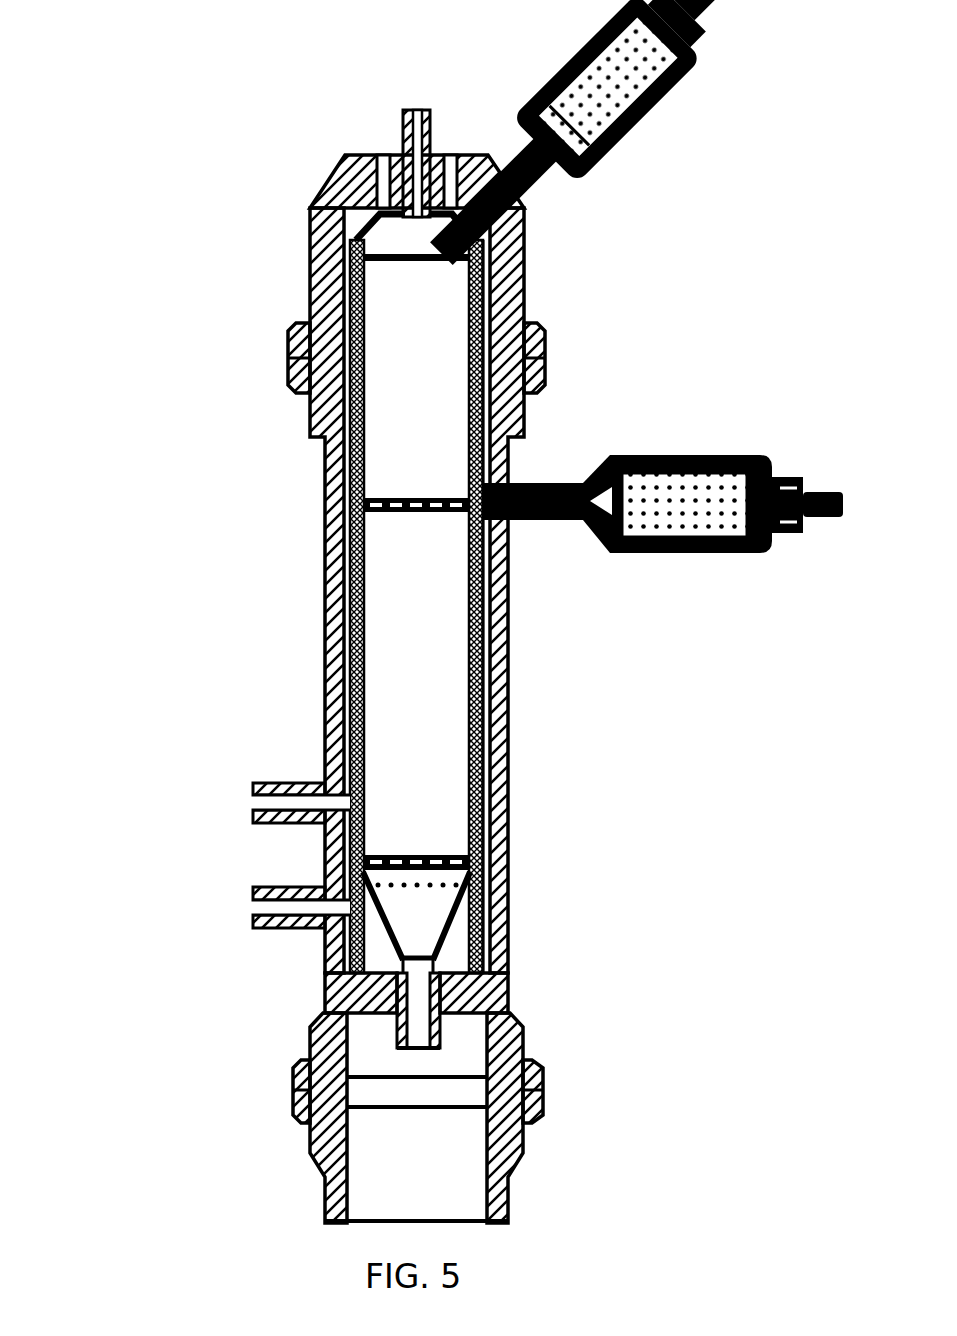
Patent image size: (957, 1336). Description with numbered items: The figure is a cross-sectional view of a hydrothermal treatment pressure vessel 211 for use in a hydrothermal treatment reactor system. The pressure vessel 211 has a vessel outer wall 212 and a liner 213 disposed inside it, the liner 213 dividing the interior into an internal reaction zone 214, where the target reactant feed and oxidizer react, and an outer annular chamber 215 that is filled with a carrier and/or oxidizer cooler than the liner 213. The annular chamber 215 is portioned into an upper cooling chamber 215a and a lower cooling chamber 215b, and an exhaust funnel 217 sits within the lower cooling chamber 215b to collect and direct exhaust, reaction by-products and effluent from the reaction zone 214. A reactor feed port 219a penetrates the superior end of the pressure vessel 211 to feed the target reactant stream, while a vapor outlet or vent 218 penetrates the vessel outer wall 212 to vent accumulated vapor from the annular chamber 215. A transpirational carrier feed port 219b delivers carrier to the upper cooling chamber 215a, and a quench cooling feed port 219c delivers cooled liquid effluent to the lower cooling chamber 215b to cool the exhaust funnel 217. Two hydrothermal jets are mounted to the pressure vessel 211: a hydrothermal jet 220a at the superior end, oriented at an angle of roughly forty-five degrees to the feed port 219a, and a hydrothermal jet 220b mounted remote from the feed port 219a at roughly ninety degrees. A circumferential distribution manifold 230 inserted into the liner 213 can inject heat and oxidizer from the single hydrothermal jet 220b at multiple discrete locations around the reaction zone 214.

The hydrothermal treatment pressure vessel 211 is at (244, 195).
The vessel outer wall 212 is at (327, 618).
The liner 213 is at (360, 560).
The internal reaction zone 214 is at (443, 633).
The outer annular chamber 215 is at (482, 700).
The upper cooling chamber 215a is at (482, 760).
The lower cooling chamber 215b is at (462, 955).
The exhaust funnel 217 is at (455, 925).
The vapor outlet or vent 218 is at (405, 1018).
The reactor feed port 219a is at (405, 122).
The transpirational carrier feed port 219b is at (253, 803).
The quench cooling feed port 219c is at (253, 920).
The hydrothermal jet 220a is at (680, 157).
The hydrothermal jet 220b is at (681, 410).
The circumferential distribution manifold 230 is at (400, 498).